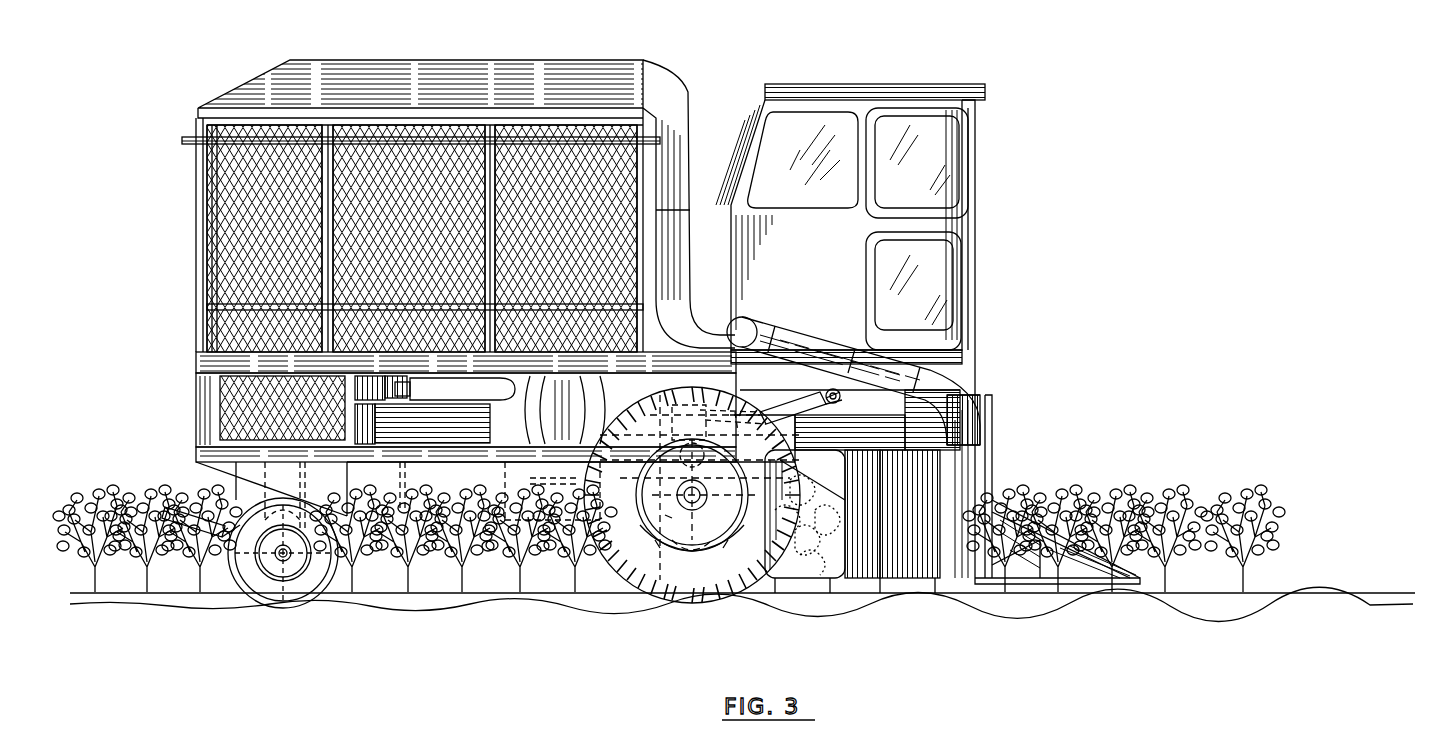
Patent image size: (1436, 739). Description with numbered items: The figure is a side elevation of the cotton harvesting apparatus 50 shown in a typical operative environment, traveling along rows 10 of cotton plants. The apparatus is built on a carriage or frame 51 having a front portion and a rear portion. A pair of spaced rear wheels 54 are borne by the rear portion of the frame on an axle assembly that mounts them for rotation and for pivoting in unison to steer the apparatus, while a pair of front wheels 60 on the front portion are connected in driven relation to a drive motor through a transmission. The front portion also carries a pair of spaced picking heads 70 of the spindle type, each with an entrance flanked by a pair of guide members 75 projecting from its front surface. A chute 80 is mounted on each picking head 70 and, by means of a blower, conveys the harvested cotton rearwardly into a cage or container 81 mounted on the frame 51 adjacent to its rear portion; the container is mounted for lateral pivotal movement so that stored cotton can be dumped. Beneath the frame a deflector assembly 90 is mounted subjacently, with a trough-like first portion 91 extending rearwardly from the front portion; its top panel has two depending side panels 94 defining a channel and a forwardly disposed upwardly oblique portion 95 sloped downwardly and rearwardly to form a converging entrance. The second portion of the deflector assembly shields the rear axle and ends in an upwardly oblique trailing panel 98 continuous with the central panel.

The rows 10 is at (1292, 468).
The apparatus 50 is at (724, 86).
The frame 51 is at (217, 452).
The rear wheels 54 is at (278, 598).
The front wheels 60 is at (690, 601).
The picking heads 70 is at (945, 490).
The guide members 75 is at (1078, 565).
The chute 80 is at (955, 393).
The container 81 is at (572, 128).
The deflector assembly 90 is at (640, 442).
The first portion 91 is at (520, 484).
The side panels 94 is at (668, 543).
The upwardly oblique portion 95 is at (885, 466).
The trailing panel 98 is at (216, 520).